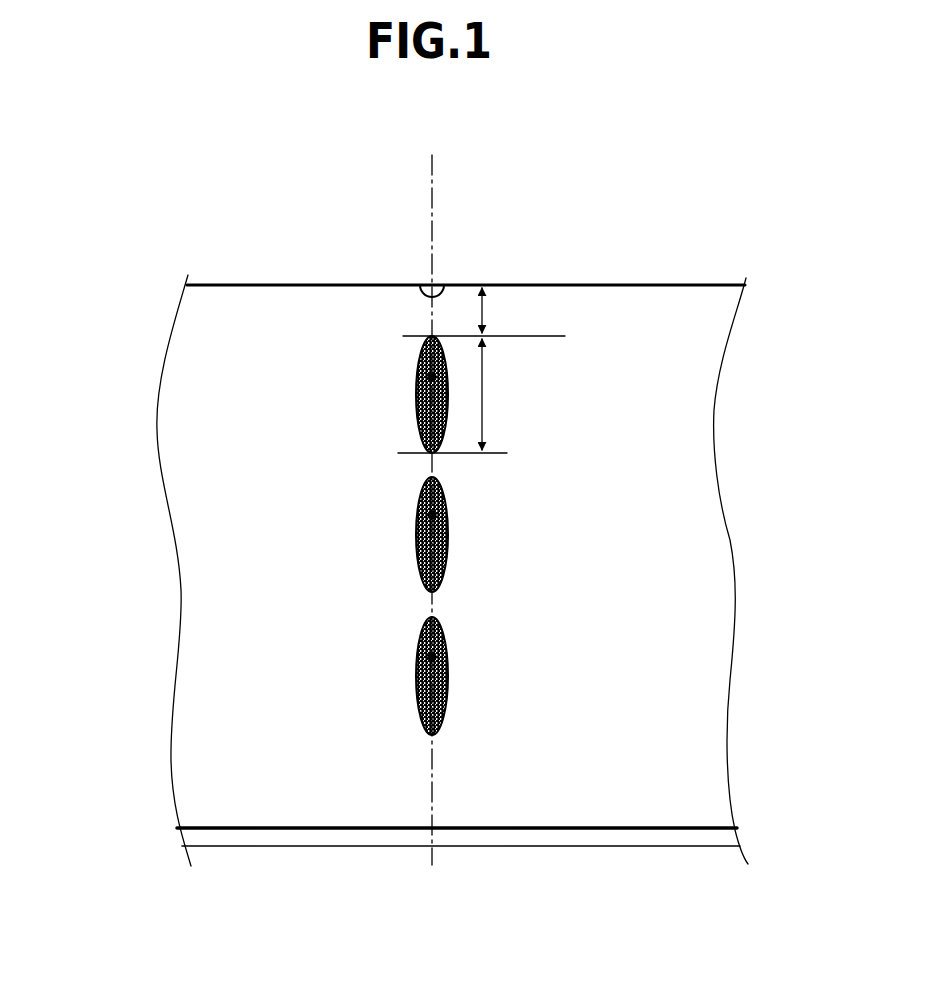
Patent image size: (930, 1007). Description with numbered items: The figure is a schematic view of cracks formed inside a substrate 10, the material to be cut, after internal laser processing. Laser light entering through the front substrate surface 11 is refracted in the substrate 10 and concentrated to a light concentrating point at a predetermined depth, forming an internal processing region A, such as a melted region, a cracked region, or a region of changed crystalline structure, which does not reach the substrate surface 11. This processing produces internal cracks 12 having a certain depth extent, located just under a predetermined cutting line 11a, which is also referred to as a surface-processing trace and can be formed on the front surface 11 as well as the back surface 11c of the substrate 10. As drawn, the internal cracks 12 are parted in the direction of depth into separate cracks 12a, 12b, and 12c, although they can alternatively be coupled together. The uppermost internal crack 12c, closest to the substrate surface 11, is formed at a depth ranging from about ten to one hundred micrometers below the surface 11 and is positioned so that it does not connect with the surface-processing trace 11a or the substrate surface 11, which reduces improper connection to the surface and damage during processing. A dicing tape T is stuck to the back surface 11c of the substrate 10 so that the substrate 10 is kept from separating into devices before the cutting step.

The substrate 10 is at (716, 455).
The substrate surface 11 is at (652, 285).
The cutting line 11a is at (437, 285).
The back surface 11c is at (692, 828).
The internal cracks 12 is at (90, 371).
The internal crack 12a is at (418, 678).
The internal crack 12b is at (418, 542).
The uppermost internal crack 12c is at (418, 428).
The internal processing region A is at (418, 378).
The center line C is at (430, 248).
The dicing tape T is at (722, 838).